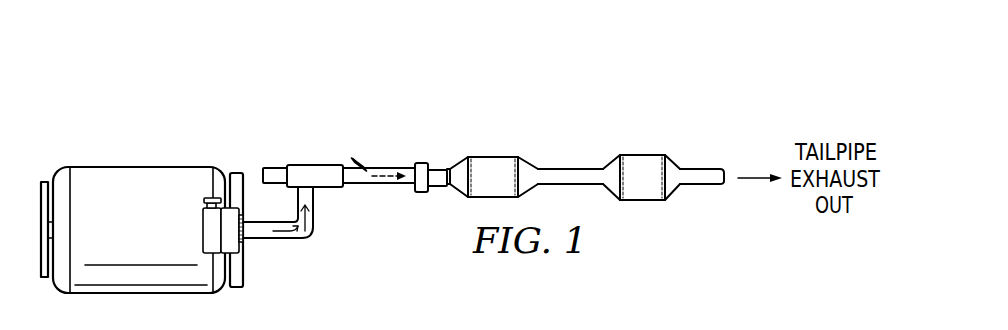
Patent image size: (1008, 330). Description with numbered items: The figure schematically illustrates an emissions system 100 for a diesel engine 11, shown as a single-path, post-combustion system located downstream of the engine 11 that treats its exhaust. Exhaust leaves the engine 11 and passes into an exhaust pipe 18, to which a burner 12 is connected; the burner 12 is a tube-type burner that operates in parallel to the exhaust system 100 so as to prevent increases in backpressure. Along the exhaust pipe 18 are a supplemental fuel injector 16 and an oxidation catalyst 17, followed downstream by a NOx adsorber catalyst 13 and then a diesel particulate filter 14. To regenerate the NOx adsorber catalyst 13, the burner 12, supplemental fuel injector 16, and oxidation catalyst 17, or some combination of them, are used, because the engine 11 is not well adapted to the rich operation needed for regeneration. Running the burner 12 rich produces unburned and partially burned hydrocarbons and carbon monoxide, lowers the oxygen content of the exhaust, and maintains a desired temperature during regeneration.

The emissions system 100 is at (367, 77).
The diesel engine 11 is at (119, 167).
The burner 12 is at (307, 165).
The NOx adsorber catalyst 13 is at (495, 157).
The diesel particulate filter 14 is at (647, 155).
The supplemental fuel injector 16 is at (358, 162).
The oxidation catalyst 17 is at (418, 162).
The exhaust pipe 18 is at (385, 185).